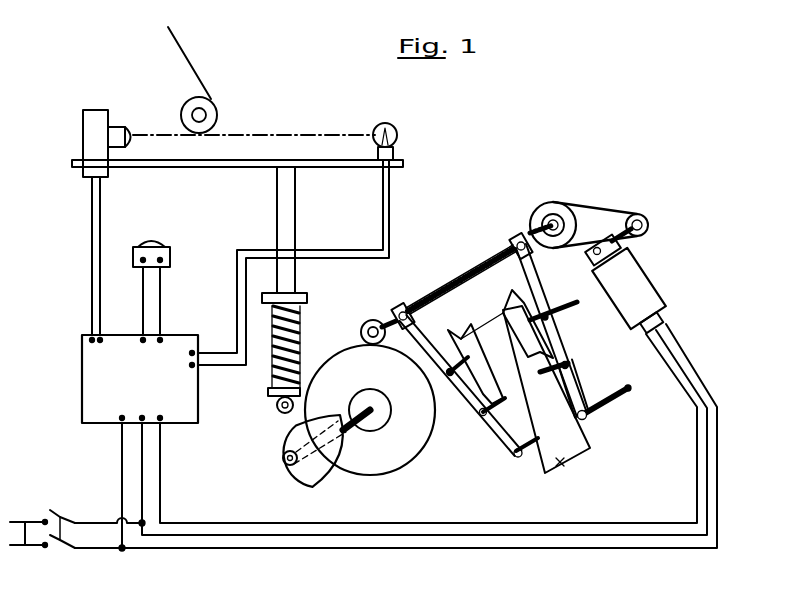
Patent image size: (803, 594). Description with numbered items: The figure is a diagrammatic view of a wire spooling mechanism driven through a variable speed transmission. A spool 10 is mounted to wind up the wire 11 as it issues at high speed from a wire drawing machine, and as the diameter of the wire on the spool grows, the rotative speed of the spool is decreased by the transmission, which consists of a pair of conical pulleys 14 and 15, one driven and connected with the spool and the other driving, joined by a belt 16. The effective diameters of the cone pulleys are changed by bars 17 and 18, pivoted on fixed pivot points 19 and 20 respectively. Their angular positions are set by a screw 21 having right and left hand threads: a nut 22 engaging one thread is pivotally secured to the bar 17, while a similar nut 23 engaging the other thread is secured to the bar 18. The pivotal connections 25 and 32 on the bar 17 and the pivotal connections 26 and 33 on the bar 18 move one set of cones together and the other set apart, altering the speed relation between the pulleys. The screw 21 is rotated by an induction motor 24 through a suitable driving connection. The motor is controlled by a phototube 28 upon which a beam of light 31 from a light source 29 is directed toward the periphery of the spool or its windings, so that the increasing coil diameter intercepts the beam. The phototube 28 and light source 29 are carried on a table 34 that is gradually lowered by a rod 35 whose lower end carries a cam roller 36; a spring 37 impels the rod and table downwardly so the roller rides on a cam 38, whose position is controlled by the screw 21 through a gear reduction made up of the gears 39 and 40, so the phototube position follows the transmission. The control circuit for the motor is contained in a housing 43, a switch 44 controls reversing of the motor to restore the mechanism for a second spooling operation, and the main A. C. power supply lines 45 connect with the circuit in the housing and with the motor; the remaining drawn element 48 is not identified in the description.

The spool 10 is at (211, 105).
The wire 11 is at (196, 71).
The conical pulley 14 is at (550, 474).
The conical pulley 15 is at (509, 304).
The belt 16 is at (564, 462).
The bar 17 is at (573, 378).
The bar 18 is at (496, 433).
The fixed pivot point 19 is at (568, 363).
The fixed pivot point 20 is at (481, 417).
The screw 21 is at (459, 278).
The nut 22 is at (515, 240).
The nut 23 is at (403, 309).
The induction motor 24 is at (646, 273).
The pivotal connection 25 is at (547, 316).
The pivotal connection 26 is at (450, 377).
The phototube 28 is at (90, 140).
The light source 29 is at (396, 133).
The beam of light 31 is at (293, 133).
The pivotal connection 32 is at (587, 418).
The pivotal connection 33 is at (516, 458).
The table 34 is at (208, 164).
The rod 35 is at (280, 216).
The cam roller 36 is at (277, 406).
The spring 37 is at (300, 331).
The cam 38 is at (310, 482).
The gear 39 is at (412, 455).
The gear 40 is at (372, 320).
The housing 43 is at (82, 386).
The switch 44 is at (170, 256).
The main A. C. power supply lines 45 is at (33, 545).
The switch 48 is at (61, 548).